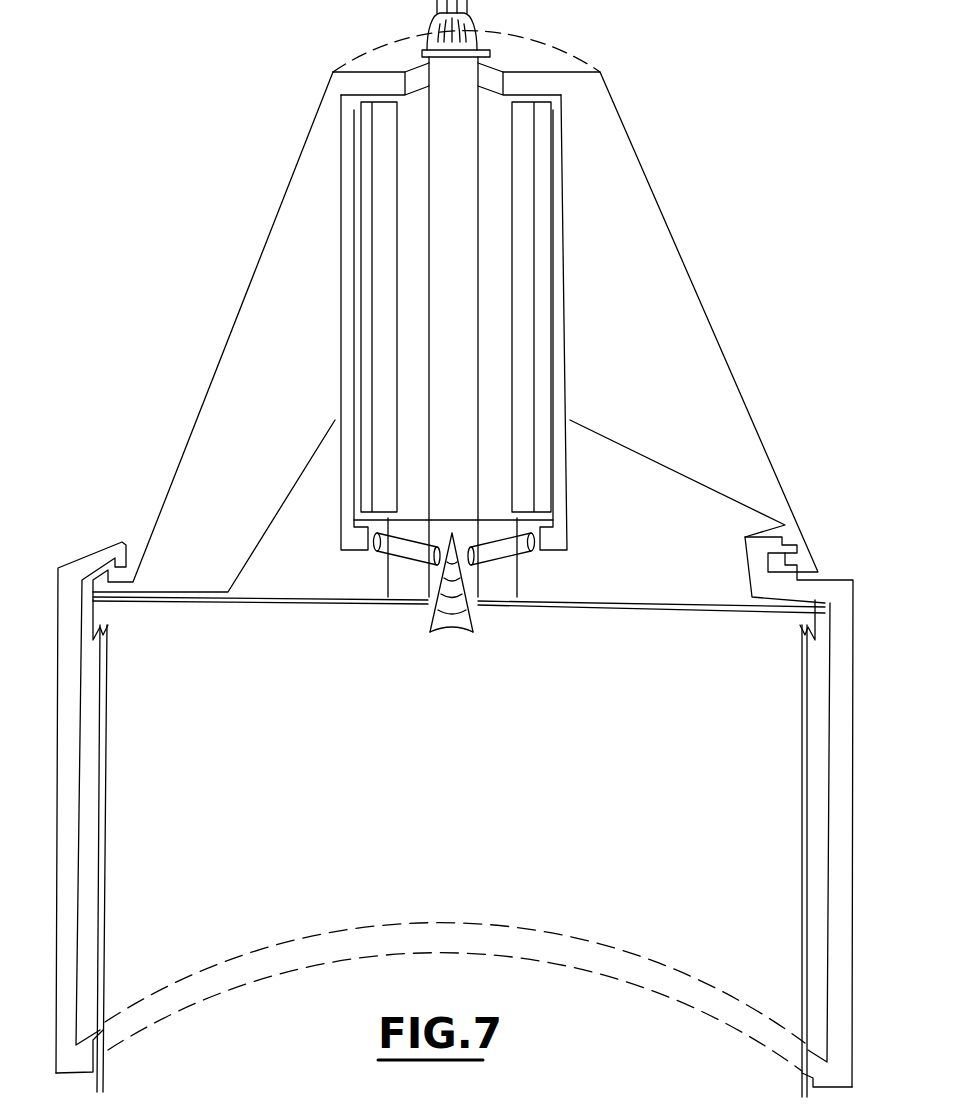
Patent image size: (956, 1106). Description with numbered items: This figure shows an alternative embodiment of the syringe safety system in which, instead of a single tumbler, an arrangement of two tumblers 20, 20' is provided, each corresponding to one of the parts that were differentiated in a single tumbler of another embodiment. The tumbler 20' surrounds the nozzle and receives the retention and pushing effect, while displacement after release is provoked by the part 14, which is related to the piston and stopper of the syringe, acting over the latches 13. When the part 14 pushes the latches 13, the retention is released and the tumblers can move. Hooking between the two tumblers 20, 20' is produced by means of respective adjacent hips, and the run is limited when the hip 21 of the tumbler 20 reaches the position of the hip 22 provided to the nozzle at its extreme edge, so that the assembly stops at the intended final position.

The latches 13 is at (397, 542).
The part related to the piston and stopper 14 is at (447, 617).
The tumbler 20 is at (454, 814).
The tumbler surrounding the nozzle 20' is at (459, 338).
The hip of the tumbler 21 is at (78, 1057).
The hip provided to the nozzle at its extreme edge 22 is at (108, 632).